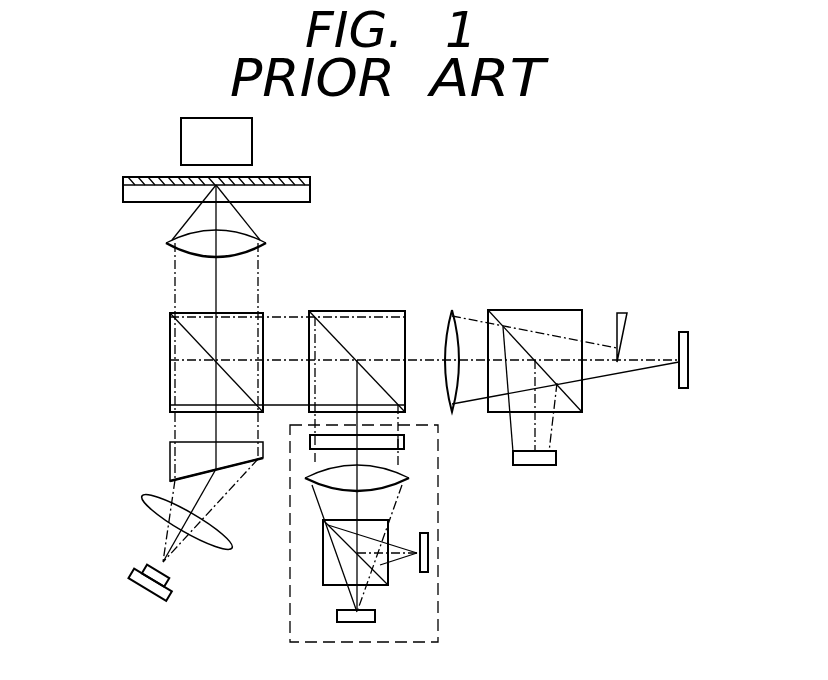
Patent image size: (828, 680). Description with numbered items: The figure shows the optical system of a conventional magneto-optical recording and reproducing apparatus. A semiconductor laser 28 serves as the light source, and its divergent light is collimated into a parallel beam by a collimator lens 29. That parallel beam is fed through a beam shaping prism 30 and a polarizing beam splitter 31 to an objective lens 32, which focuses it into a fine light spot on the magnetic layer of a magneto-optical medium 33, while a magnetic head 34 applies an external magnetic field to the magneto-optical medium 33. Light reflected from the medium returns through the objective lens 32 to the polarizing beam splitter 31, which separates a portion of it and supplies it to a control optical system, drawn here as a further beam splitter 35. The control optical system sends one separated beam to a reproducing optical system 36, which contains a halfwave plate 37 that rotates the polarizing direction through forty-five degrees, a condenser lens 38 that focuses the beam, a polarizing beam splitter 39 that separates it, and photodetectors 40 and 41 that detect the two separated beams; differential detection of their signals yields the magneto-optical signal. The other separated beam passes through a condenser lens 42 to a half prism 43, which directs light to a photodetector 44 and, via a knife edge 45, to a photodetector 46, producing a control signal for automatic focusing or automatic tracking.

The semiconductor laser 28 is at (150, 588).
The collimator lens 29 is at (155, 513).
The beam shaping prism 30 is at (170, 455).
The polarizing beam splitter 31 is at (170, 368).
The objective lens 32 is at (262, 238).
The magneto-optical medium 33 is at (310, 186).
The magnetic head 34 is at (253, 139).
The beam splitter 35 is at (380, 310).
The reproducing optical system 36 is at (290, 625).
The halfwave plate 37 is at (406, 443).
The condenser lens 38 is at (409, 478).
The polarizing beam splitter 39 is at (323, 573).
The photodetector 40 is at (430, 552).
The photodetector 41 is at (377, 616).
The condenser lens 42 is at (450, 310).
The half prism 43 is at (568, 310).
The photodetector 44 is at (558, 458).
The knife edge 45 is at (622, 312).
The photodetector 46 is at (681, 330).